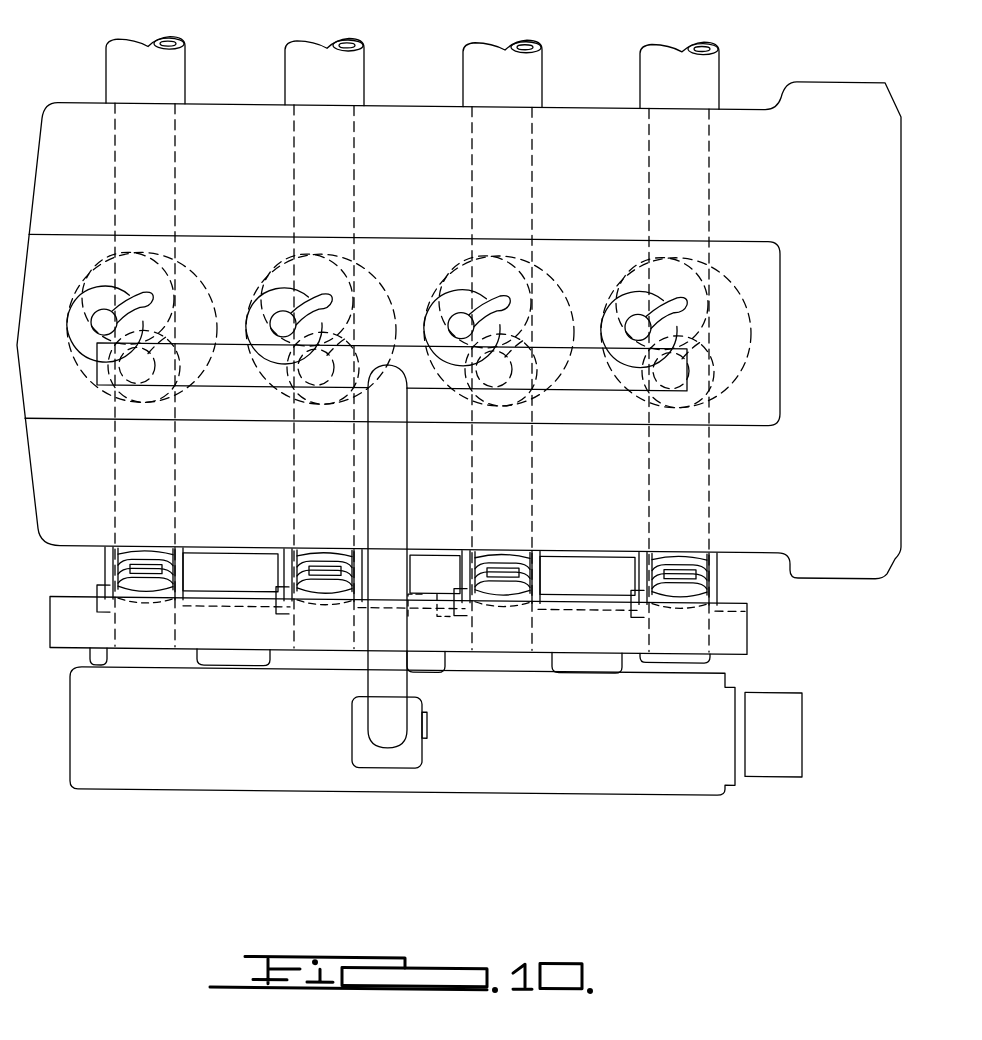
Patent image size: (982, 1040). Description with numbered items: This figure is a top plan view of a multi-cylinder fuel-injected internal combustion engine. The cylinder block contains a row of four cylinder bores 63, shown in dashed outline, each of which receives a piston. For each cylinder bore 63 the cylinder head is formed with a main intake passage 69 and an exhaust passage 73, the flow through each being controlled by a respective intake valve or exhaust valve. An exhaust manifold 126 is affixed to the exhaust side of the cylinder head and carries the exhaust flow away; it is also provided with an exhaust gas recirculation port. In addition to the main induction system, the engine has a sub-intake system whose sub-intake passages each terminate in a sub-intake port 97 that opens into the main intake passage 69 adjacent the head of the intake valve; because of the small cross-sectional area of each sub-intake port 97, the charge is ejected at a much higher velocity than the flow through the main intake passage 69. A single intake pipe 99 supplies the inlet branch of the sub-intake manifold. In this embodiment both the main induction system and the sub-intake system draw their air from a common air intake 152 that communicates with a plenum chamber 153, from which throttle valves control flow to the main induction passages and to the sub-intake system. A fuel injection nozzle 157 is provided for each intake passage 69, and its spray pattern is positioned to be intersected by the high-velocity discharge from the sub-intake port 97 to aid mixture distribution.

The exhaust manifold 126 is at (712, 66).
The exhaust passage 73 is at (300, 150).
The cylinder bore 63 is at (202, 294).
The sub-intake port 97 is at (165, 334).
The intake passage 69 is at (293, 480).
The fuel injection nozzle 157 is at (343, 545).
The intake pipe 99 is at (402, 493).
The common air intake 152 is at (783, 702).
The plenum chamber 153 is at (320, 775).